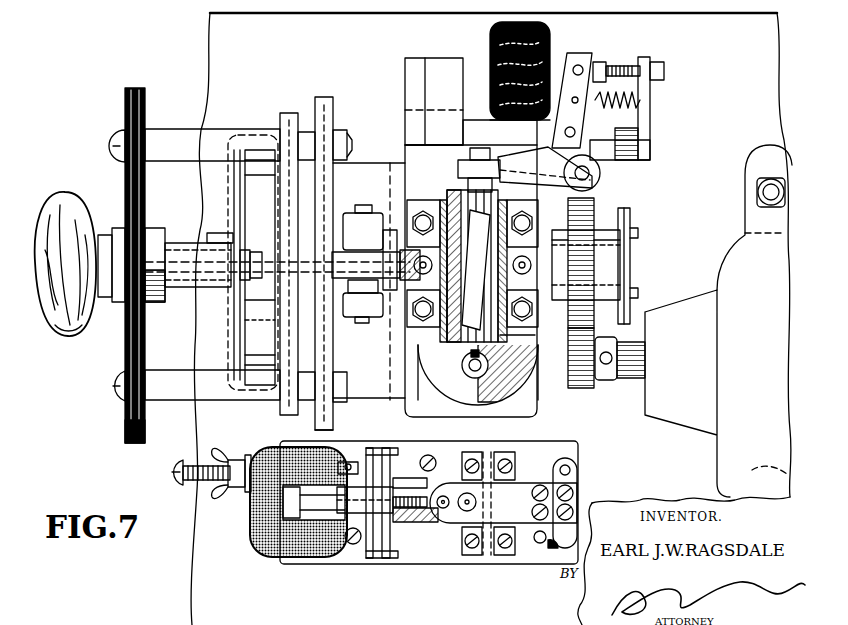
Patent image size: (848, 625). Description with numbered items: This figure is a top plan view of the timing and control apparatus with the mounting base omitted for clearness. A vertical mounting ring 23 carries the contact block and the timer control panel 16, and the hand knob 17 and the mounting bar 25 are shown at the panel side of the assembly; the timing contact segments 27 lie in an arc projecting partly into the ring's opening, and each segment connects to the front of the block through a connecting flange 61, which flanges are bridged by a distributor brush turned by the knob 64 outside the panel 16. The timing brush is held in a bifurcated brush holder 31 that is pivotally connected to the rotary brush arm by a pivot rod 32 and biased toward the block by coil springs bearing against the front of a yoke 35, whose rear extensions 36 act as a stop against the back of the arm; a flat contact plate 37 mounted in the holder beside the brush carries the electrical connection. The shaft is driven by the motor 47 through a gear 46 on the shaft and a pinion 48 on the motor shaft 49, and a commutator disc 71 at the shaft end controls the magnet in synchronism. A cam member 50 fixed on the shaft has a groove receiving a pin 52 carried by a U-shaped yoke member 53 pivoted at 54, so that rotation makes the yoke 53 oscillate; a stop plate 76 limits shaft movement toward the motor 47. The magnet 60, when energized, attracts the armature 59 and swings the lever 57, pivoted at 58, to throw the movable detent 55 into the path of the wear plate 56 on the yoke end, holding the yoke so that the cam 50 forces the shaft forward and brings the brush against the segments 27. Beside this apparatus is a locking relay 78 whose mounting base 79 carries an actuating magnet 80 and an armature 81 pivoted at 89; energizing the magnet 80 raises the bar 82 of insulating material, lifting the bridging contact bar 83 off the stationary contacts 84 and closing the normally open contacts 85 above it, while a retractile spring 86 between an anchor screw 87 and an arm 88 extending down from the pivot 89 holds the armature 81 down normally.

The timer control panel 16 is at (125, 438).
The hand knob 17 is at (65, 192).
The vertical mounting ring 23 is at (324, 107).
The mounting bar 25 is at (125, 90).
The timing contact segments 27 is at (305, 426).
The brush holder 31 is at (355, 314).
The pivot rod 32 is at (362, 320).
The yoke 35 is at (350, 212).
The rear extensions of the yoke 36 is at (392, 304).
The flat contact plate 37 is at (385, 230).
The gear 46 is at (594, 214).
The motor 47 is at (730, 244).
The pinion 48 is at (580, 390).
The motor shaft 49 is at (627, 382).
The cam member 50 is at (452, 158).
The pin 52 is at (440, 163).
The U-shaped yoke member 53 is at (530, 368).
The pivot 54 is at (462, 369).
The movable detent 55 is at (490, 167).
The wear plate 56 is at (465, 186).
The lever 57 is at (534, 188).
The pivot 58 is at (600, 176).
The armature 59 is at (584, 66).
The magnet 60 is at (548, 37).
The connecting flanges 61 is at (268, 353).
The knob 64 is at (79, 330).
The commutator disc 71 is at (624, 266).
The stop plate 76 is at (520, 338).
The locking relay 78 is at (400, 560).
The mounting base 79 is at (485, 566).
The actuating magnet 80 is at (250, 538).
The armature 81 is at (342, 548).
The bar of insulating material 82 is at (440, 525).
The bridging contact bar 83 is at (488, 545).
The stationary contacts 84 is at (503, 460).
The normally open contacts 85 is at (466, 494).
The retractile spring 86 is at (358, 442).
The anchor screw 87 is at (186, 464).
The arm 88 is at (395, 462).
The armature pivot 89 is at (380, 548).